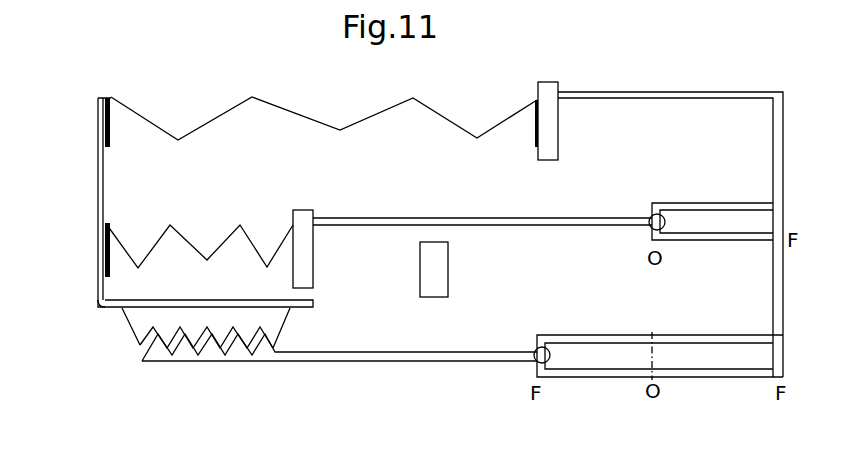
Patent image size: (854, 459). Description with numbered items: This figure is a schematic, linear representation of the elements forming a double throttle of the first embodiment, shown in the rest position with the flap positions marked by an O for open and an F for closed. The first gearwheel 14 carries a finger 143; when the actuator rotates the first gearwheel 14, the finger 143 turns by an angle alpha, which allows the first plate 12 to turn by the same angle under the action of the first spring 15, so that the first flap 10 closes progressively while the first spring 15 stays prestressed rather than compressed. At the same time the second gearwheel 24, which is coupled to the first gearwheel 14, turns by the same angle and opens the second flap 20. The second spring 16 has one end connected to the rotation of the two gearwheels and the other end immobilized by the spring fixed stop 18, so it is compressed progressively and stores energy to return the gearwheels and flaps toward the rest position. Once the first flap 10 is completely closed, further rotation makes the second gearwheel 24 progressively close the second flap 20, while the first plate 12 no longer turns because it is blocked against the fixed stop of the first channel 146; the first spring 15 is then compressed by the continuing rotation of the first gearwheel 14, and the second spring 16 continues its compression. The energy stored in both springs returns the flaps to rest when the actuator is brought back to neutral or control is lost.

The first flap 10 is at (665, 222).
The first plate 12 is at (303, 212).
The first gearwheel 14 is at (136, 316).
The first spring 15 is at (192, 238).
The second spring 16 is at (238, 105).
The spring fixed stop 18 is at (548, 85).
The second flap 20 is at (550, 355).
The second gearwheel 24 is at (156, 355).
The finger 143 is at (98, 178).
The fixed stop of the first channel 146 is at (432, 270).